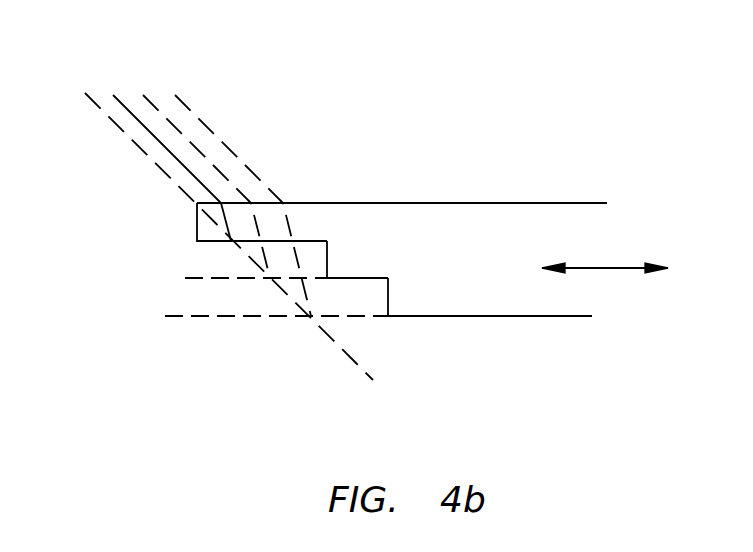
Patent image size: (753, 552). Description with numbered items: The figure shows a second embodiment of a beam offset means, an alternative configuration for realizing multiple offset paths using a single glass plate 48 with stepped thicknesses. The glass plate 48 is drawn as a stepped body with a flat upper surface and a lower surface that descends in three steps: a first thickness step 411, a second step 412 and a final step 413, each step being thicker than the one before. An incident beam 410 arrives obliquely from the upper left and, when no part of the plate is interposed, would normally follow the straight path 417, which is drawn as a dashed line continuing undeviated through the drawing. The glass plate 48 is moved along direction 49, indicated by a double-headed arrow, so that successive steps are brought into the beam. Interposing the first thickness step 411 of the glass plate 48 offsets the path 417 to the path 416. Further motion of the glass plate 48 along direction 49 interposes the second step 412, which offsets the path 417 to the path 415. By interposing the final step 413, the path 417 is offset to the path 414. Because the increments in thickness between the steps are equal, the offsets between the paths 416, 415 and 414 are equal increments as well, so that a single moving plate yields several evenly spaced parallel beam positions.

The glass plate 48 is at (582, 202).
The direction 49 is at (600, 268).
The incident beam 410 is at (352, 362).
The first thickness step 411 is at (200, 244).
The second step 412 is at (348, 278).
The final step 413 is at (543, 318).
The path 414 is at (240, 158).
The path 415 is at (148, 98).
The path 416 is at (120, 101).
The path 417 is at (110, 118).